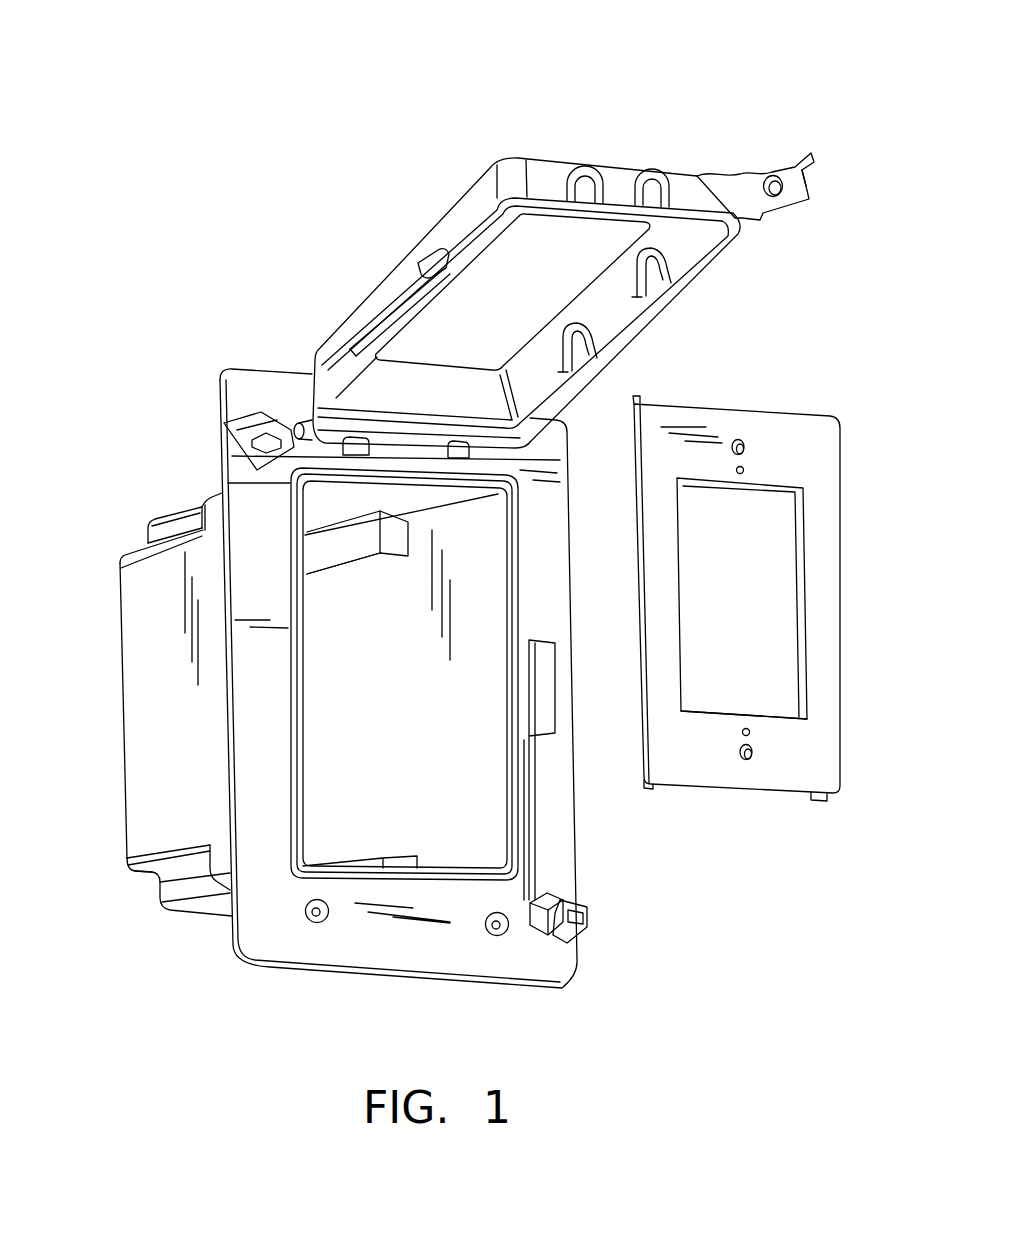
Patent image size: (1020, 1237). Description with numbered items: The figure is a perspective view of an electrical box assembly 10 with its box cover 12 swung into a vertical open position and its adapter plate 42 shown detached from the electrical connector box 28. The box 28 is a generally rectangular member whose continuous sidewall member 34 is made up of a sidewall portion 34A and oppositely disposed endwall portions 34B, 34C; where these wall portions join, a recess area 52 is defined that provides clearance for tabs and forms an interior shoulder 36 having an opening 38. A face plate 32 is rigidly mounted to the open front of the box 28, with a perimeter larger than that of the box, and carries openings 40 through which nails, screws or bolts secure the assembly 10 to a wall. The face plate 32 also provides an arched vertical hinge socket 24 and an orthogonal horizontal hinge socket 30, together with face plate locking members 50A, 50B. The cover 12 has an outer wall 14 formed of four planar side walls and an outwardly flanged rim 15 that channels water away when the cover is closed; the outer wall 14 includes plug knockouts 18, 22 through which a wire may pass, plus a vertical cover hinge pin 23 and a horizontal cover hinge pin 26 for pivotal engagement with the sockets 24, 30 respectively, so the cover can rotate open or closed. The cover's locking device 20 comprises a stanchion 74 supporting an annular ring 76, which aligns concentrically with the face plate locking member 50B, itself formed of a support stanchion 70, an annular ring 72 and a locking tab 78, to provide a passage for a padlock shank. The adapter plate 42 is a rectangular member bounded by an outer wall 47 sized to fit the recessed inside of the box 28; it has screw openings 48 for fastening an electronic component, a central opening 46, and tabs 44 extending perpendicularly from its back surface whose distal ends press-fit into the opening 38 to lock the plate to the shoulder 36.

The electrical box assembly 10 is at (560, 132).
The box cover 12 is at (540, 157).
The outer wall 14 is at (470, 207).
The outwardly flanged rim 15 is at (460, 258).
The plug knockout 18 is at (587, 186).
The cover locking device 20 is at (812, 201).
The plug knockout 22 is at (667, 305).
The vertical cover hinge pin 23 is at (366, 447).
The vertical hinge socket 24 is at (480, 452).
The horizontal cover hinge pin 26 is at (380, 312).
The electrical connector box 28 is at (123, 792).
The horizontal hinge socket 30 is at (546, 660).
The face plate 32 is at (548, 777).
The sidewall member 34 is at (177, 733).
The sidewall portion 34A is at (156, 693).
The endwall portion 34B is at (166, 514).
The endwall portion 34C is at (208, 907).
The shoulder 36 is at (338, 553).
The opening 38 is at (393, 517).
The openings 40 is at (317, 927).
The adapter plate 42 is at (775, 412).
The tabs 44 is at (634, 404).
The opening 46 is at (750, 600).
The outer wall 47 is at (827, 650).
The openings 48 is at (742, 467).
The face plate locking member 50A is at (240, 413).
The face plate locking member 50B is at (580, 940).
The recess area 52 is at (156, 880).
The support stanchion 70 is at (553, 893).
The annular ring 72 is at (557, 935).
The stanchion 74 is at (718, 190).
The annular ring 76 is at (770, 185).
The locking tab 78 is at (590, 917).